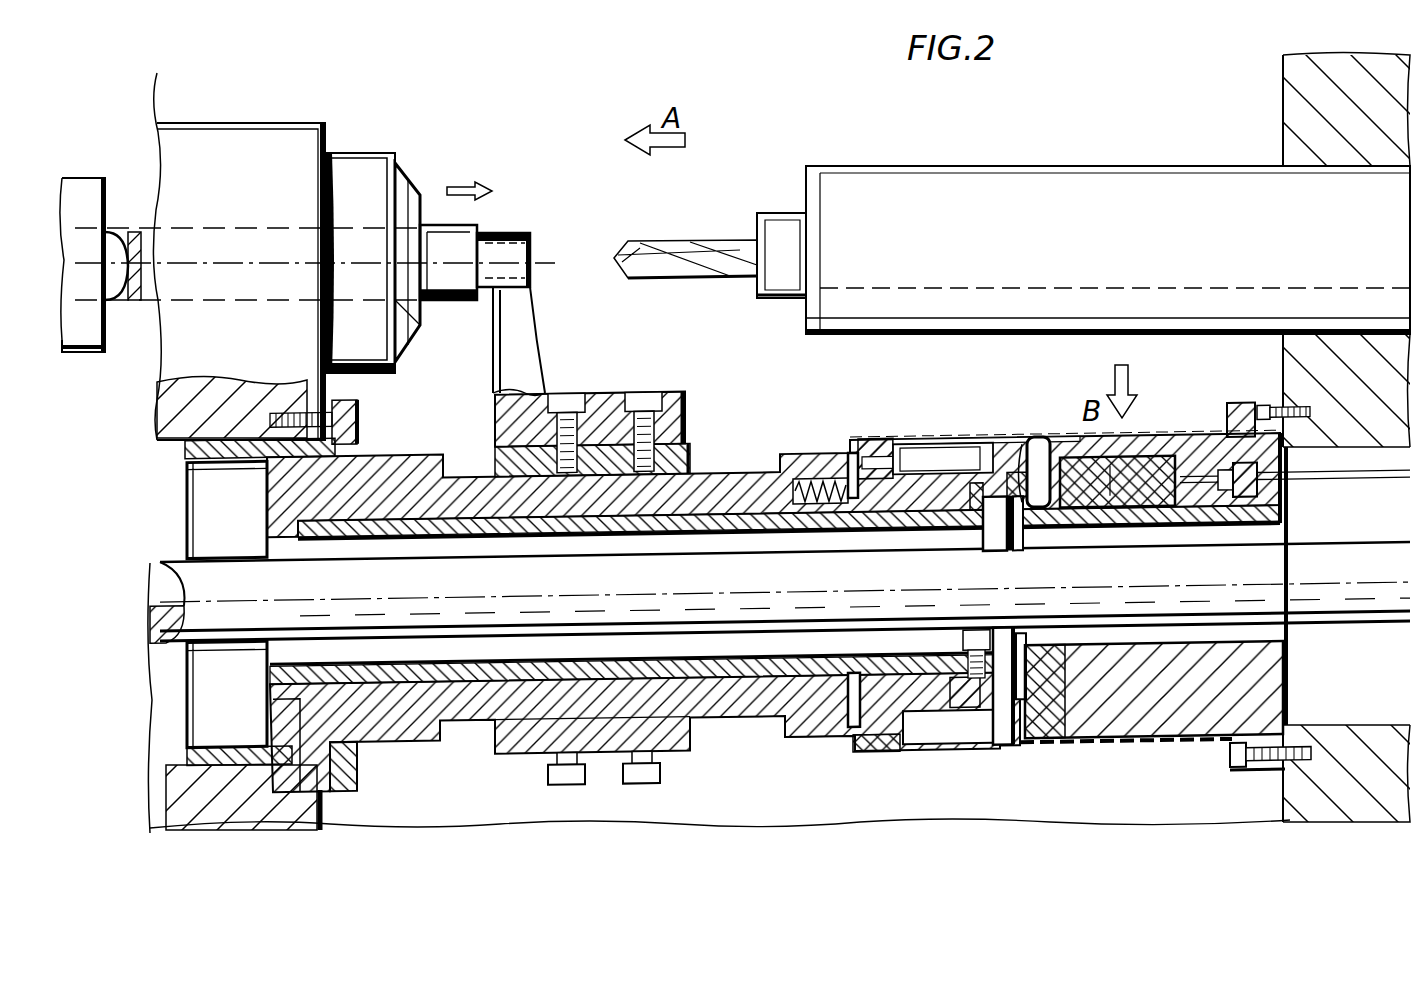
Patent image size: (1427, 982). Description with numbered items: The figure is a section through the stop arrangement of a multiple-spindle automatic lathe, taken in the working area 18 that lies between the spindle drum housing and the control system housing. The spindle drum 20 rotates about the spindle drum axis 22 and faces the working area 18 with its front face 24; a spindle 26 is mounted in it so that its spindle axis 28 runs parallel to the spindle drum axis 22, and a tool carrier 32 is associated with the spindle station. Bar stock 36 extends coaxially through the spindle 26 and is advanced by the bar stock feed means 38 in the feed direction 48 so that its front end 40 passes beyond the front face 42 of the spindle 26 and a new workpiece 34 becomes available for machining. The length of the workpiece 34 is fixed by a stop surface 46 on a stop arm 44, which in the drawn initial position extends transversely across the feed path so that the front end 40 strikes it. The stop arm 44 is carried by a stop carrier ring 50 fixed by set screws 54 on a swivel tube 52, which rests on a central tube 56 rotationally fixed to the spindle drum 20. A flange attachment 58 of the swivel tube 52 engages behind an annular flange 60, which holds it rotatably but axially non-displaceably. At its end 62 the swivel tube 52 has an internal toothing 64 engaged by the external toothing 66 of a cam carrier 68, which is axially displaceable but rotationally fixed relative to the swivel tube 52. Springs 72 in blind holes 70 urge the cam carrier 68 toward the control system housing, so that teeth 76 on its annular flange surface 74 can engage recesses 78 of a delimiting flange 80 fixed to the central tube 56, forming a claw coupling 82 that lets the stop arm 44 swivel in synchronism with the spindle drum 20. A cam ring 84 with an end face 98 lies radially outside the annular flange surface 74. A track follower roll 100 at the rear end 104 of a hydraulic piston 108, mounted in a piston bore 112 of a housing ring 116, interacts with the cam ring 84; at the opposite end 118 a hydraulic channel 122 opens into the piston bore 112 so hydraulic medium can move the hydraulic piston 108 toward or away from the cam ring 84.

The working area 18 is at (752, 90).
The spindle drum 20 is at (232, 118).
The spindle drum axis 22 is at (162, 575).
The front face 24 is at (330, 125).
The spindle 26 is at (366, 140).
The spindle axis 28 is at (258, 262).
The tool carrier 32 is at (1070, 182).
The workpiece 34 is at (455, 235).
The bar stock 36 is at (183, 292).
The bar stock feed means 38 is at (90, 180).
The front end 40 is at (495, 245).
The front face 42 is at (410, 322).
The stop arm 44 is at (510, 346).
The stop surface 46 is at (462, 293).
The feed direction 48 is at (455, 186).
The stop carrier ring 50 is at (597, 735).
The swivel tube 52 is at (470, 700).
The set screws 54 is at (634, 783).
The central tube 56 is at (723, 668).
The flange attachment 58 is at (300, 735).
The annular flange 60 is at (360, 775).
The end 62 is at (920, 722).
The internal toothing 64 is at (820, 732).
The external toothing 66 is at (868, 752).
The cam carrier 68 is at (955, 710).
The blind holes 70 is at (805, 478).
The springs 72 is at (832, 478).
The annular flange surface 74 is at (976, 505).
The teeth 76 is at (946, 468).
The recesses 78 is at (978, 690).
The delimiting flange 80 is at (1000, 690).
The claw coupling 82 is at (905, 450).
The cam ring 84 is at (1030, 700).
The end face 98 is at (1093, 745).
The track follower roll 100 is at (1030, 440).
The rear end 104 is at (1062, 443).
The hydraulic piston 108 is at (1142, 450).
The piston bore 112 is at (1110, 502).
The housing ring 116 is at (1180, 748).
The opposite end 118 is at (1182, 445).
The hydraulic channel 122 is at (1207, 450).